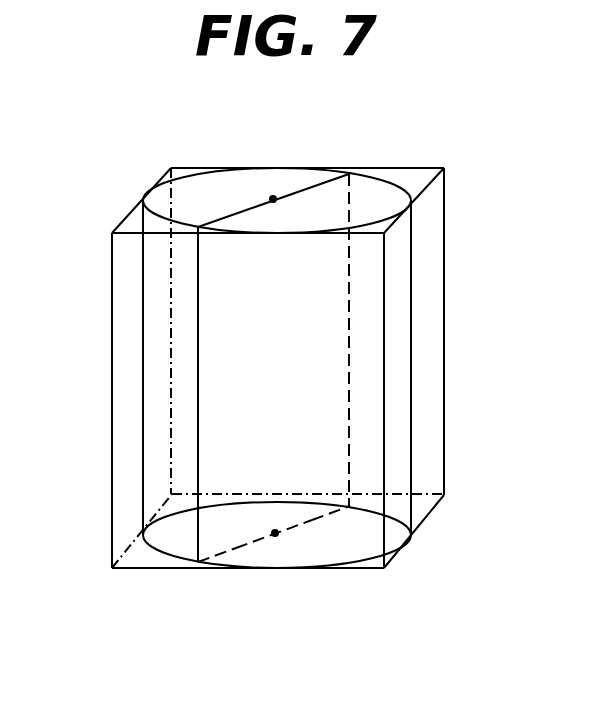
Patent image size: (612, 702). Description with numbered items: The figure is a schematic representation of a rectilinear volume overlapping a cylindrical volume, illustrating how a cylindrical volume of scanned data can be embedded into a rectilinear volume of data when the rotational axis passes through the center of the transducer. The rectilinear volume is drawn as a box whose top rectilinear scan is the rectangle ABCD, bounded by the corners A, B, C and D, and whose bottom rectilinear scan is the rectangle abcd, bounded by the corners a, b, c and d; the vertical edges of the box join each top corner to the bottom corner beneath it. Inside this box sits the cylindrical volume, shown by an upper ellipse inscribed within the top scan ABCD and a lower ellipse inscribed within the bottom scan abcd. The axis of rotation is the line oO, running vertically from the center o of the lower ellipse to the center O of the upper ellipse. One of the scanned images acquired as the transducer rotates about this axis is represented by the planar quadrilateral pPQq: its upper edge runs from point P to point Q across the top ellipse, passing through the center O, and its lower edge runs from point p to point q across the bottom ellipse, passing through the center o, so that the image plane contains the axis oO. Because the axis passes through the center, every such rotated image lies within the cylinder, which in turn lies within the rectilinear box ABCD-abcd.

The vertex of top rectilinear scan ABCD A is at (129, 368).
The vertex of top rectilinear scan ABCD B is at (298, 317).
The vertex of top rectilinear scan ABCD C is at (426, 326).
The vertex of top rectilinear scan ABCD D is at (259, 400).
The vertex of bottom rectilinear scan abcd a is at (238, 537).
The vertex of bottom rectilinear scan abcd b is at (298, 487).
The vertex of bottom rectilinear scan abcd c is at (424, 525).
The vertex of bottom rectilinear scan abcd d is at (398, 562).
The corner of scanned image pPQq P is at (197, 227).
The corner of scanned image pPQq Q is at (350, 173).
The upper end of rotational axis oO O is at (279, 197).
The corner of scanned image pPQq p is at (198, 563).
The corner of scanned image pPQq q is at (350, 504).
The lower end of rotational axis oO o is at (275, 536).